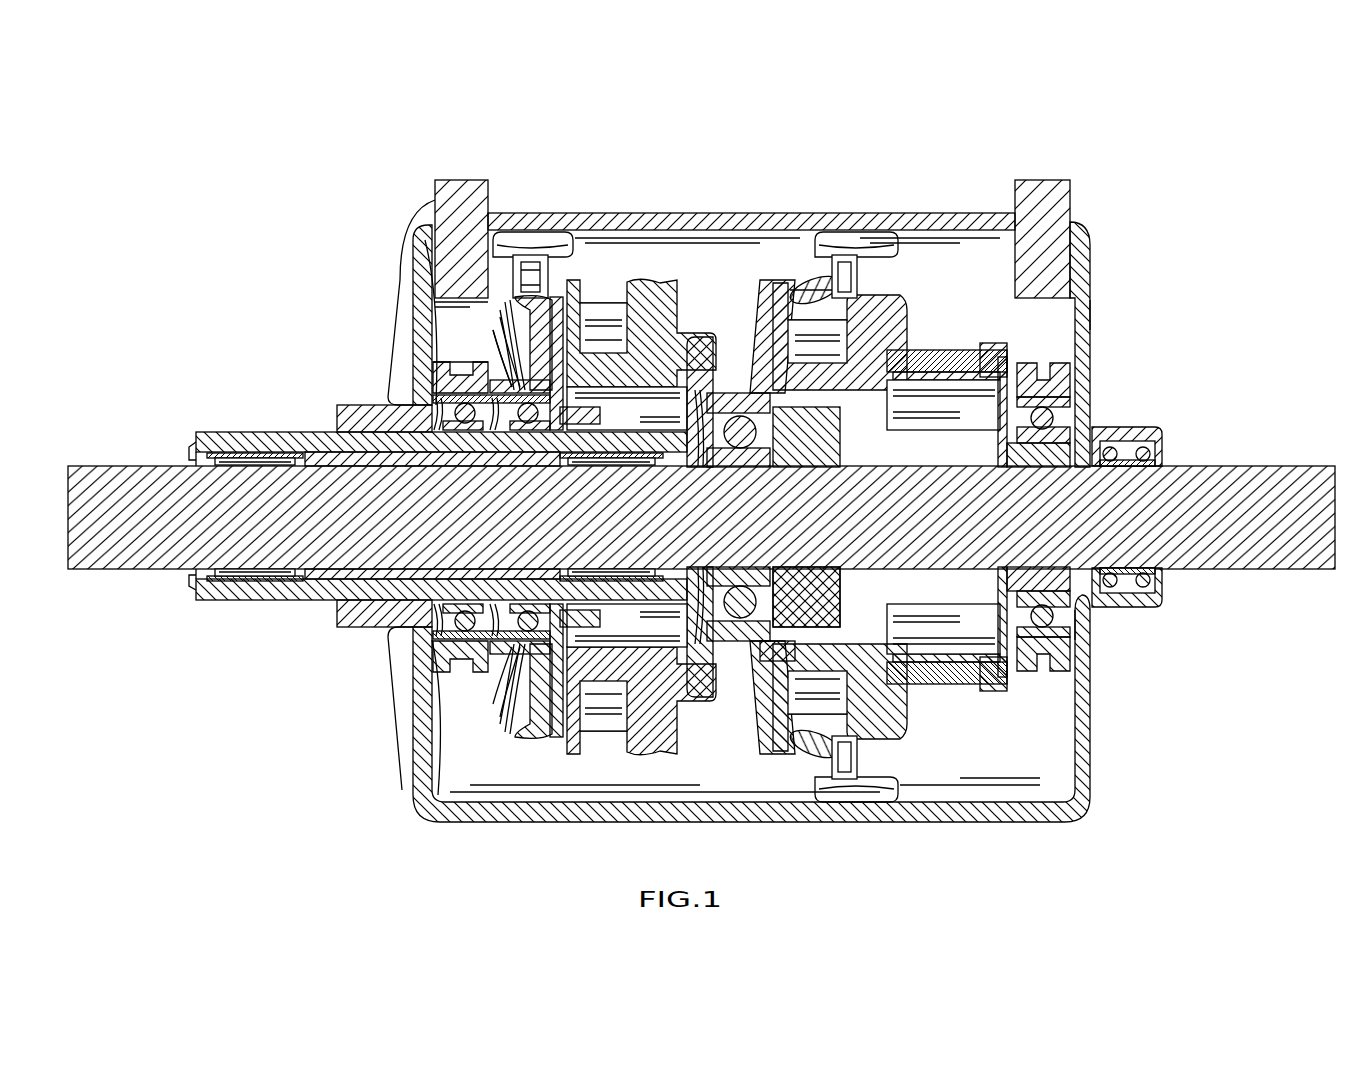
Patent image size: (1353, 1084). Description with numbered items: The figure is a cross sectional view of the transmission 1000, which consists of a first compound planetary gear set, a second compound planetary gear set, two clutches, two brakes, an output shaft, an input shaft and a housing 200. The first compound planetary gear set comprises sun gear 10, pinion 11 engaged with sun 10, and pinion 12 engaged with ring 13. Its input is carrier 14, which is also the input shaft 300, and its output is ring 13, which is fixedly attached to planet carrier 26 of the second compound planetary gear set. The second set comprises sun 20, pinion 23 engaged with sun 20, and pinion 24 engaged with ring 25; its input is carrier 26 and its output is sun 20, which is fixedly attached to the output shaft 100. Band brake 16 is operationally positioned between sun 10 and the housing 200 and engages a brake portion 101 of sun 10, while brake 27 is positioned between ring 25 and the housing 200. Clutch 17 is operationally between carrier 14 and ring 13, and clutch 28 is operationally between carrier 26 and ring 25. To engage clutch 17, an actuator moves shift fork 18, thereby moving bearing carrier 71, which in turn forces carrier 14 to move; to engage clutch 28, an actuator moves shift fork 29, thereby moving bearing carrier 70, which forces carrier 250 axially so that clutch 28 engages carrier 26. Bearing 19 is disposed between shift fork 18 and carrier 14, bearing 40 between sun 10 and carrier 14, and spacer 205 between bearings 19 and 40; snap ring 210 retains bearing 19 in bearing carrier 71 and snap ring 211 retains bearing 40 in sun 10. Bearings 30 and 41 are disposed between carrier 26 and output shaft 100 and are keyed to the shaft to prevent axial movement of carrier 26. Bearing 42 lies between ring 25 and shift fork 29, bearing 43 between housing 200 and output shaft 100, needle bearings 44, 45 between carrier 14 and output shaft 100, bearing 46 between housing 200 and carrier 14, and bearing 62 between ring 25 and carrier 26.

The sun gear 10 is at (430, 720).
The brake portion 101 is at (540, 735).
The pinion 11 is at (600, 735).
The pinion 12 is at (602, 700).
The ring 13 is at (655, 300).
The carrier 14 is at (320, 597).
The brake 16 is at (528, 255).
The clutch 17 is at (606, 297).
The shift fork 18 is at (440, 203).
The bearing 19 is at (455, 627).
The sun 20 is at (887, 740).
The pinion 23 is at (807, 645).
The pinion 24 is at (805, 630).
The ring 25 is at (858, 360).
The planet carrier 26 is at (700, 700).
The brake 27 is at (862, 265).
The clutch 28 is at (815, 250).
The shift fork 29 is at (1075, 193).
The bearing 30 is at (745, 655).
The bearing 40 is at (480, 680).
The bearing 41 is at (1030, 680).
The bearing 42 is at (1077, 633).
The bearing 43 is at (1150, 430).
The needle bearing 44 is at (260, 577).
The needle bearing 45 is at (600, 567).
The bearing 46 is at (370, 410).
The bearing 62 is at (960, 360).
The bearing carrier 70 is at (1062, 380).
The bearing carrier 71 is at (470, 400).
The output shaft 100 is at (140, 480).
The housing 200 is at (1093, 320).
The spacer 205 is at (500, 440).
The snap ring 210 is at (440, 380).
The snap ring 211 is at (502, 345).
The carrier 250 is at (907, 723).
The input shaft 300 is at (295, 432).
The drive assembly 1000 is at (1210, 197).